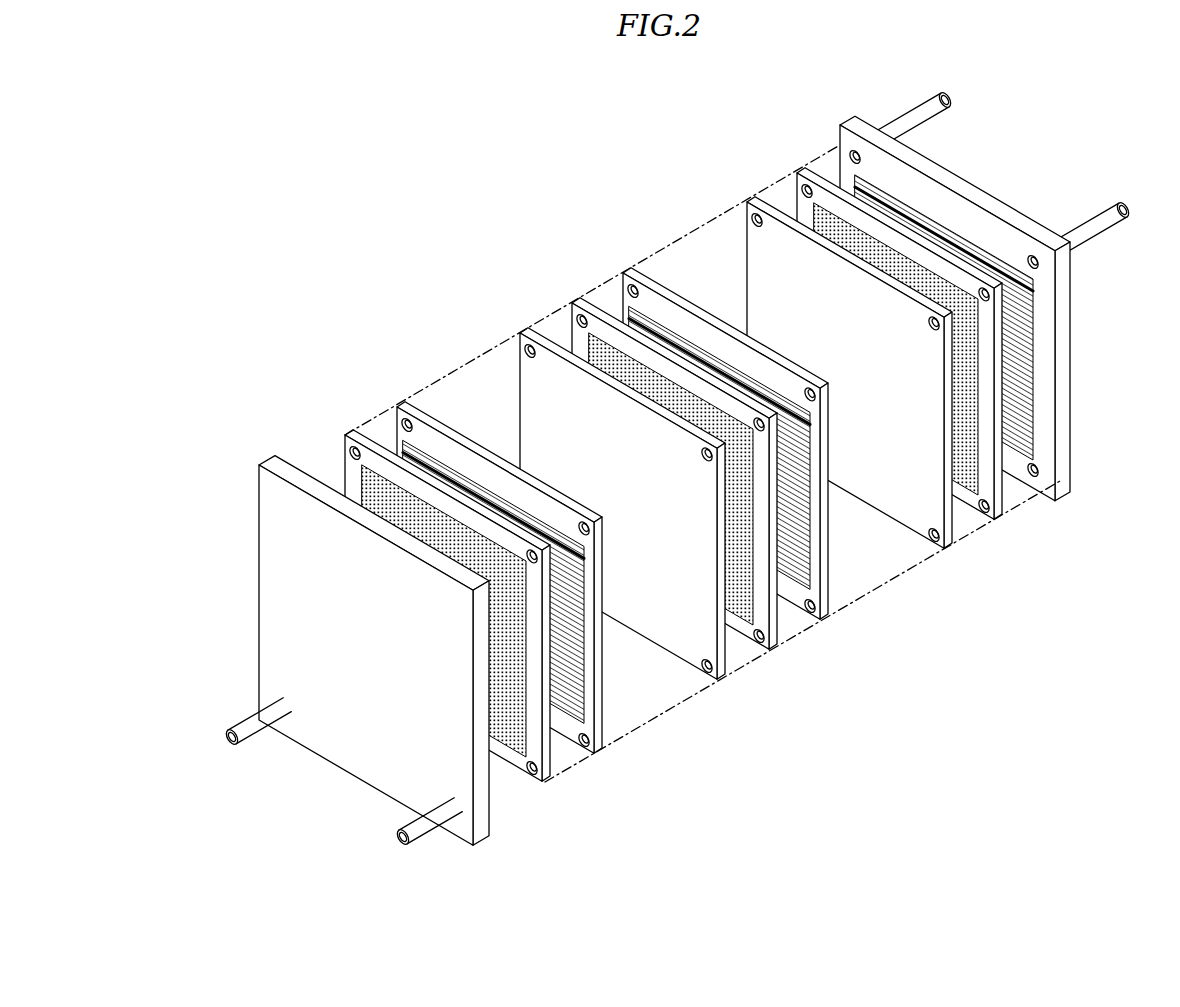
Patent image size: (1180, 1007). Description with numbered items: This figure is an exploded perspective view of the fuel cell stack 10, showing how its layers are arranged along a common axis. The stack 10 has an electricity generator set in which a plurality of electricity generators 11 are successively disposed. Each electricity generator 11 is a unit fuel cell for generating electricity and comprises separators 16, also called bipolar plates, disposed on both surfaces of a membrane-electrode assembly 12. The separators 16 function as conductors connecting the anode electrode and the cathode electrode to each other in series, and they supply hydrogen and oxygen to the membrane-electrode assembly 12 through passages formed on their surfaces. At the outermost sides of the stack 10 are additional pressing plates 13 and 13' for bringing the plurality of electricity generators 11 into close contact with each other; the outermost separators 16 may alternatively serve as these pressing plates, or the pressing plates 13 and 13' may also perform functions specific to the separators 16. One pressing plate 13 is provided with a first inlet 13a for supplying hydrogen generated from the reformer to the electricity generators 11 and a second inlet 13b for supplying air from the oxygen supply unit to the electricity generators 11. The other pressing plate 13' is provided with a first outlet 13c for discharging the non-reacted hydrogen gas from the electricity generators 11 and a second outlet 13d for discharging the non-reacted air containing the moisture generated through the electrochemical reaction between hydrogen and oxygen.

The stack 10 is at (443, 259).
The electricity generator 11 is at (728, 530).
The membrane-electrode assembly 12 is at (780, 669).
The pressing plate 13 is at (987, 308).
The pressing plate 13' is at (411, 651).
The first inlet 13a is at (918, 118).
The second inlet 13b is at (1106, 226).
The first outlet 13c is at (418, 832).
The second outlet 13d is at (243, 722).
The separator 16 is at (728, 520).